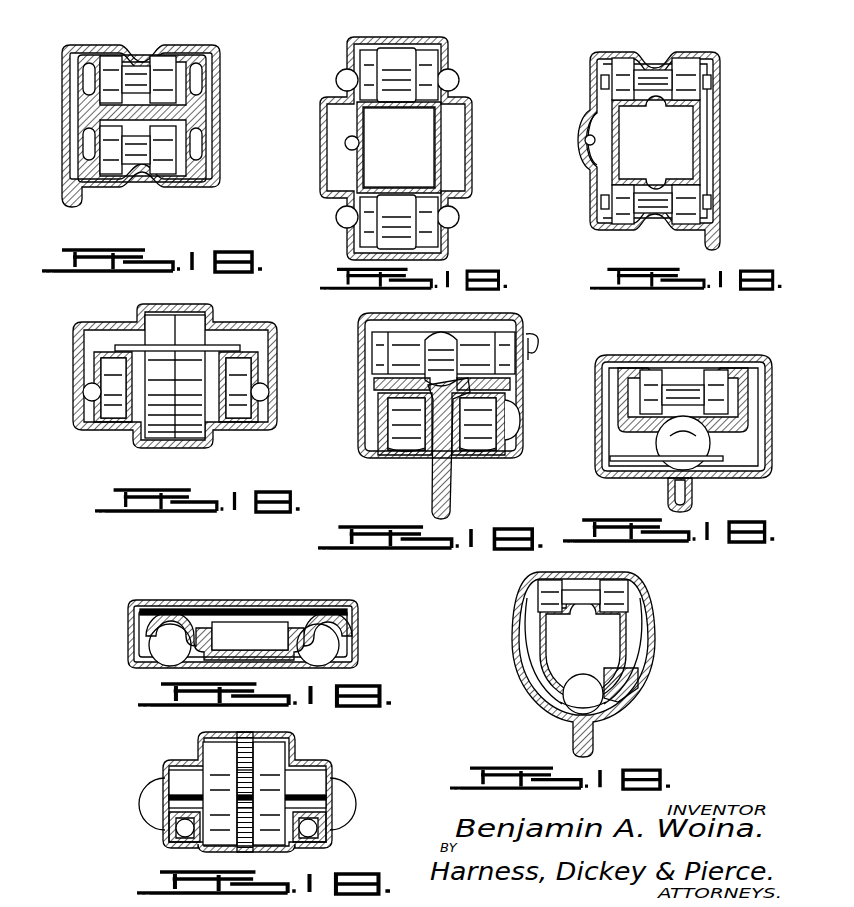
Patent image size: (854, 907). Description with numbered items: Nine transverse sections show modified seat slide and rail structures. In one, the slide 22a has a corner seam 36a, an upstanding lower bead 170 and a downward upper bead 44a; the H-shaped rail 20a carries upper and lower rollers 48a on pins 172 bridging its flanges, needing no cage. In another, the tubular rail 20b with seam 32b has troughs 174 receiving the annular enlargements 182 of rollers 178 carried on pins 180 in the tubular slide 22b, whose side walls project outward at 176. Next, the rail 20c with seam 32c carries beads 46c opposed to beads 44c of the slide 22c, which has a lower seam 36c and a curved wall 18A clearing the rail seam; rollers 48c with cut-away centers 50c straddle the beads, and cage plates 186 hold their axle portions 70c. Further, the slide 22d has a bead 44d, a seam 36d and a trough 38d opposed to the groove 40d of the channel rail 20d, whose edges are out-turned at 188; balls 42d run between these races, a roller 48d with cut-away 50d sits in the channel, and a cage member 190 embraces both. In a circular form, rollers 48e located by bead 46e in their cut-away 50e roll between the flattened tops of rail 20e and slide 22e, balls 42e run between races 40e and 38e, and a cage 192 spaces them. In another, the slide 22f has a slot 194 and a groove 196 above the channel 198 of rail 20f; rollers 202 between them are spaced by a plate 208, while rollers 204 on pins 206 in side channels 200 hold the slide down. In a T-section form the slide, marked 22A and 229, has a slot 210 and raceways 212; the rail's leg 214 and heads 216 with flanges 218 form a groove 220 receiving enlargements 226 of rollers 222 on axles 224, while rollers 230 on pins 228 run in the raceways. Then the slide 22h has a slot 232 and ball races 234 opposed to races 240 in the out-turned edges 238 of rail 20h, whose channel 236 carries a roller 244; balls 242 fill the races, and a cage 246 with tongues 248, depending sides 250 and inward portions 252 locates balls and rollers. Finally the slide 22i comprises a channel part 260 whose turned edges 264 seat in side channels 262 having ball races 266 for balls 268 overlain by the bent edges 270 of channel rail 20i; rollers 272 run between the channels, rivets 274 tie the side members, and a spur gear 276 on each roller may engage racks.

In FIG. 18, the housing 22a is at (216, 54).
In FIG. 18, the housing depression 44a is at (142, 60).
In FIG. 18, the inner frame 20a is at (209, 112).
In FIG. 18, the roller 48a is at (166, 64).
In FIG. 18, the bearing pin end 172 is at (82, 78).
In FIG. 18, the housing bottom depression 170 is at (140, 186).
In FIG. 18, the housing flange 36a is at (78, 207).
In FIG. 19, the housing 22b is at (446, 42).
In FIG. 19, the bearing 180 is at (459, 80).
In FIG. 19, the roller 178 is at (425, 62).
In FIG. 19, the roller bulge 182 is at (395, 58).
In FIG. 19, the inner frame 176 is at (357, 178).
In FIG. 19, the center block 174 is at (405, 112).
In FIG. 19, the inner frame 20b is at (448, 132).
In FIG. 19, the pin 32b is at (347, 146).
In FIG. 20, the housing 22c is at (721, 108).
In FIG. 20, the housing liner 186 is at (709, 142).
In FIG. 20, the inner frame 20c is at (692, 142).
In FIG. 20, the frame notch 46c is at (653, 106).
In FIG. 20, the roller 48c is at (621, 64).
In FIG. 20, the roller neck 50c is at (645, 66).
In FIG. 20, the housing depression 44c is at (657, 68).
In FIG. 20, the spacer 70c is at (601, 80).
In FIG. 20, the assembly 18A is at (588, 110).
In FIG. 20, the pin 32c is at (584, 141).
In FIG. 20, the housing flange 36c is at (721, 241).
In FIG. 23, the housing 22f is at (277, 350).
In FIG. 24, the housing 22f is at (358, 335).
In FIG. 23, the threaded nut 198 is at (180, 450).
In FIG. 23, the flange 208 is at (222, 345).
In FIG. 23, the bolt head 202 is at (195, 320).
In FIG. 23, the bolt 196 is at (150, 322).
In FIG. 23, the roller frame 20f is at (262, 382).
In FIG. 24, the roller frame 20f is at (319, 367).
In FIG. 23, the roller 200 is at (96, 378).
In FIG. 24, the roller 200 is at (319, 425).
In FIG. 23, the bearing 206 is at (85, 394).
In FIG. 23, the roller bracket 204 is at (112, 425).
In FIG. 24, the roller bracket 204 is at (378, 398).
In FIG. 23, the nut base 194 is at (220, 428).
In FIG. 24, the housing 22A is at (524, 350).
In FIG. 24, the upper roller 222 is at (408, 335).
In FIG. 24, the roller bulge 226 is at (441, 334).
In FIG. 24, the housing corner 229 is at (510, 320).
In FIG. 24, the clip 224 is at (560, 336).
In FIG. 24, the divider plate 216 is at (380, 384).
In FIG. 24, the shaft 214 is at (452, 512).
In FIG. 24, the roller bracket 218 is at (380, 425).
In FIG. 24, the roller bracket 228 is at (506, 432).
In FIG. 24, the lower roller 220 is at (475, 400).
In FIG. 24, the bracket base 230 is at (382, 448).
In FIG. 24, the bracket leg 212 is at (420, 460).
In FIG. 24, the shaft base 210 is at (455, 462).
In FIG. 24, the assembly 190 is at (583, 409).
In FIG. 21, the assembly 190 is at (608, 414).
In FIG. 21, the housing 22d is at (773, 428).
In FIG. 21, the housing stem 36d is at (694, 502).
In FIG. 21, the housing opening 38d is at (668, 486).
In FIG. 21, the inner frame 20d is at (766, 404).
In FIG. 21, the roller 48d is at (650, 372).
In FIG. 21, the roller neck 50d is at (675, 368).
In FIG. 21, the housing depression 44d is at (686, 370).
In FIG. 21, the frame wall 188 is at (745, 382).
In FIG. 21, the ball 40d is at (710, 440).
In FIG. 21, the ball seat 42d is at (665, 446).
In FIG. 25, the housing 22h is at (358, 628).
In FIG. 25, the track 236 is at (335, 608).
In FIG. 25, the bridge 232 is at (195, 665).
In FIG. 25, the pocket 244 is at (250, 636).
In FIG. 25, the ball 242 is at (152, 650).
In FIG. 25, the ball 250 is at (338, 648).
In FIG. 25, the ball cap 240 is at (162, 632).
In FIG. 25, the housing opening 234 is at (152, 668).
In FIG. 25, the housing opening 252 is at (342, 670).
In FIG. 25, the housing top 238 is at (188, 600).
In FIG. 25, the bridge arm 246 is at (202, 610).
In FIG. 25, the bridge top 248 is at (246, 620).
In FIG. 25, the inner frame 20h is at (290, 622).
In FIG. 26, the housing 22i is at (300, 745).
In FIG. 26, the roller 260 is at (210, 742).
In FIG. 26, the roller 264 is at (300, 755).
In FIG. 26, the knurled gear 276 is at (245, 735).
In FIG. 26, the shaft 274 is at (328, 796).
In FIG. 26, the roller end 272 is at (212, 750).
In FIG. 26, the bearing cap 262 is at (165, 775).
In FIG. 26, the bearing cup 270 is at (170, 812).
In FIG. 26, the ball 268 is at (176, 828).
In FIG. 26, the housing bottom 266 is at (178, 848).
In FIG. 26, the inner frame 20i is at (270, 850).
In FIG. 22, the housing 22e is at (663, 630).
In FIG. 22, the inner wall 192 is at (526, 648).
In FIG. 22, the inner frame 20e is at (637, 652).
In FIG. 22, the frame notch 46e is at (585, 618).
In FIG. 22, the roller 48e is at (620, 592).
In FIG. 22, the roller neck 50e is at (575, 588).
In FIG. 22, the ball 40e is at (563, 696).
In FIG. 22, the ball retainer 38e is at (600, 710).
In FIG. 22, the ball seat 42e is at (565, 712).